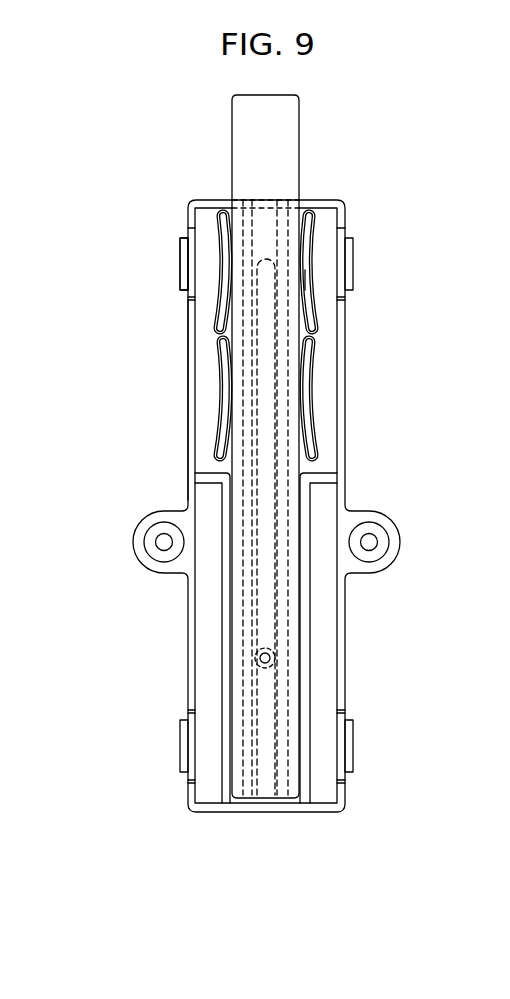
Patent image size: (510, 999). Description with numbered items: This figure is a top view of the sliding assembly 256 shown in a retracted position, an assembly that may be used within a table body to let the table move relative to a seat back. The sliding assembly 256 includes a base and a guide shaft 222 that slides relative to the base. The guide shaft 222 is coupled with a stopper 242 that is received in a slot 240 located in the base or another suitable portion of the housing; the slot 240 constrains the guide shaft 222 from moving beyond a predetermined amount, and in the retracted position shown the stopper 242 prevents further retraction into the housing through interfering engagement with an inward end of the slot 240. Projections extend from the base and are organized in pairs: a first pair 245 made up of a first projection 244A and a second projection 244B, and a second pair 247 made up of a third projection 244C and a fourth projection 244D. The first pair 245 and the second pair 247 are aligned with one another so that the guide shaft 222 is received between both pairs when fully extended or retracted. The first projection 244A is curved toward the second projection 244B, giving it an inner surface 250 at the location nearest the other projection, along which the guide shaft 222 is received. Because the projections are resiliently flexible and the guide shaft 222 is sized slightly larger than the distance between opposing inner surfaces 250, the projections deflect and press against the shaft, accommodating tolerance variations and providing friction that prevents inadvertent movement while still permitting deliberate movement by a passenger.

The sliding assembly 256 is at (153, 158).
The guide shaft 222 is at (235, 148).
The slot 240 is at (256, 583).
The stopper 242 is at (258, 658).
The first projection 244A is at (307, 238).
The second projection 244B is at (223, 238).
The third projection 244C is at (310, 442).
The fourth projection 244D is at (220, 442).
The first pair 245 is at (170, 260).
The second pair 247 is at (177, 395).
The inner surface 250 is at (305, 278).